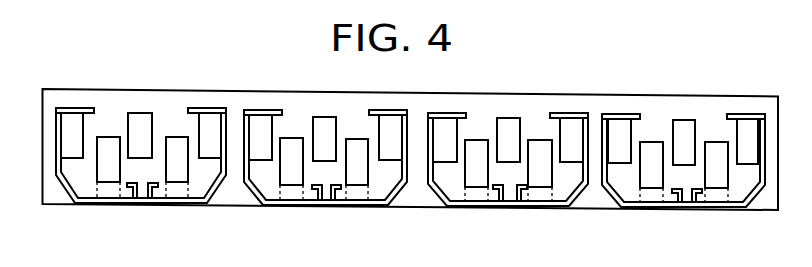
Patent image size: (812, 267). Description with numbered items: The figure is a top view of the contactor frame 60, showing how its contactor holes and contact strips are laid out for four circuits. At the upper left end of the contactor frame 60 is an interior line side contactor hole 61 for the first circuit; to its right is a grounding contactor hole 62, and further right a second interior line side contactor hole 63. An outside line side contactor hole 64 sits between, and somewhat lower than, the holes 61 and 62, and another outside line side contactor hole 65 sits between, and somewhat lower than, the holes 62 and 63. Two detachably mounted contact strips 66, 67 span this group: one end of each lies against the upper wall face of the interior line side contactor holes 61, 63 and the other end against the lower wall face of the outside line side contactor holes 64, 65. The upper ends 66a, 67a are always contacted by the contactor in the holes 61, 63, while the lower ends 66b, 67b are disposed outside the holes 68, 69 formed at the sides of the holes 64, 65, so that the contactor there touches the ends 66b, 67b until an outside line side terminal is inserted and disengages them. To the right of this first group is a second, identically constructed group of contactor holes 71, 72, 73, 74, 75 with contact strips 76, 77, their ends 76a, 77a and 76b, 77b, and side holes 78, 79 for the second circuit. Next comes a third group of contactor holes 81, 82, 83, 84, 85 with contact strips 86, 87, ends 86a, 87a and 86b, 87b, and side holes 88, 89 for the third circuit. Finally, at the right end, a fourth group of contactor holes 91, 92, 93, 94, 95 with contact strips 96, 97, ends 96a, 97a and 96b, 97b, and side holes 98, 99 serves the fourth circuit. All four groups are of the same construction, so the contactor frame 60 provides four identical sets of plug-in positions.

The contactor frame 60 is at (486, 67).
The interior line side contactor hole 61 is at (67, 120).
The grounding contactor hole 62 is at (139, 118).
The interior line side contactor hole 63 is at (209, 122).
The outside line side contactor hole 64 is at (107, 172).
The outside line side contactor hole 65 is at (177, 172).
The contact strip 66 is at (70, 203).
The end of contact strip 66a is at (86, 110).
The end of contact strip 66b is at (88, 204).
The contact strip 67 is at (214, 201).
The end of contact strip 67a is at (196, 110).
The end of contact strip 67b is at (194, 202).
The hole 68 is at (128, 202).
The hole 69 is at (170, 200).
The contactor hole 71 is at (264, 122).
The contactor hole 72 is at (323, 120).
The contactor hole 73 is at (391, 125).
The contactor hole 74 is at (297, 175).
The contactor hole 75 is at (357, 176).
The contact strip 76 is at (268, 205).
The end of contact strip 76a is at (256, 112).
The end of contact strip 76b is at (288, 204).
The contact strip 77 is at (393, 200).
The end of contact strip 77a is at (379, 113).
The end of contact strip 77b is at (378, 205).
The hole 78 is at (306, 204).
The hole 79 is at (348, 205).
The contactor hole 81 is at (450, 132).
The contactor hole 82 is at (510, 122).
The contactor hole 83 is at (578, 126).
The contactor hole 84 is at (478, 176).
The contactor hole 85 is at (541, 176).
The contact strip 86 is at (446, 206).
The end of contact strip 86a is at (451, 115).
The end of contact strip 86b is at (460, 205).
The contact strip 87 is at (578, 203).
The end of contact strip 87a is at (560, 114).
The end of contact strip 87b is at (552, 206).
The hole 88 is at (500, 204).
The hole 89 is at (568, 206).
The contactor hole 91 is at (625, 132).
The contactor hole 92 is at (684, 125).
The contactor hole 93 is at (752, 130).
The contactor hole 94 is at (652, 178).
The contactor hole 95 is at (720, 180).
The contact strip 96 is at (621, 208).
The end of contact strip 96a is at (622, 116).
The end of contact strip 96b is at (640, 208).
The contact strip 97 is at (765, 203).
The end of contact strip 97a is at (738, 116).
The end of contact strip 97b is at (746, 209).
The hole 98 is at (676, 207).
The hole 99 is at (713, 208).